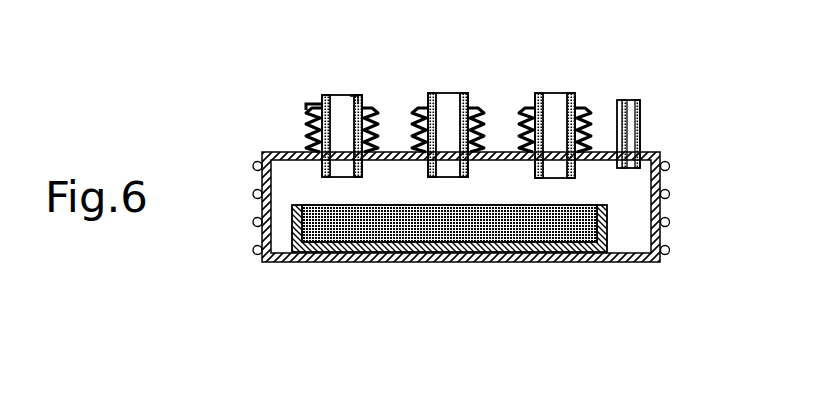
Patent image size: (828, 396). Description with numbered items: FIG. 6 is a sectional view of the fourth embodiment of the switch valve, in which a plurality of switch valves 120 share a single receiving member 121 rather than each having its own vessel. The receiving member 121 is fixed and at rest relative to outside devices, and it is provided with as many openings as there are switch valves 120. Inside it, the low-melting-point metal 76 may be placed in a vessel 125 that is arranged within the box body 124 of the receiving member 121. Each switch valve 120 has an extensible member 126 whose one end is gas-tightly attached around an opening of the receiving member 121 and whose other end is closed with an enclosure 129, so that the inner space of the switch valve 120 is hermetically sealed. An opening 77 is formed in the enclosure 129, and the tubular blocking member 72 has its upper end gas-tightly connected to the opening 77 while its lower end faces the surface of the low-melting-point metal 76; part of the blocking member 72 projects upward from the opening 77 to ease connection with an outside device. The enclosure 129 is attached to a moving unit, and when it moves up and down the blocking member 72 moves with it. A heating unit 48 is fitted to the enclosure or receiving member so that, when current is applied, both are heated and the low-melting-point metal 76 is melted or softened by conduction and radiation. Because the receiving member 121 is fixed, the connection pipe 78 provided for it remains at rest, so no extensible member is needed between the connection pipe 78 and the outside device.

The heating unit 48 is at (253, 165).
The blocking member 72 is at (306, 125).
The low-melting-point metal 76 is at (306, 205).
The opening 77 is at (352, 98).
The connection pipe 78 is at (641, 105).
The switch valve 120 is at (337, 91).
The receiving member 121 is at (437, 277).
The box body 124 is at (297, 262).
The vessel 125 is at (449, 260).
The extensible member 126 is at (372, 135).
The enclosure 129 is at (310, 107).